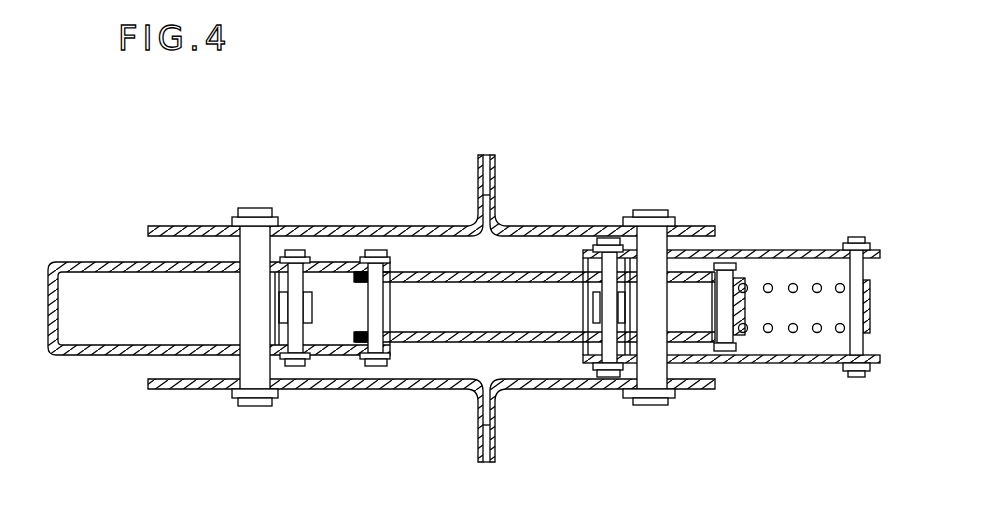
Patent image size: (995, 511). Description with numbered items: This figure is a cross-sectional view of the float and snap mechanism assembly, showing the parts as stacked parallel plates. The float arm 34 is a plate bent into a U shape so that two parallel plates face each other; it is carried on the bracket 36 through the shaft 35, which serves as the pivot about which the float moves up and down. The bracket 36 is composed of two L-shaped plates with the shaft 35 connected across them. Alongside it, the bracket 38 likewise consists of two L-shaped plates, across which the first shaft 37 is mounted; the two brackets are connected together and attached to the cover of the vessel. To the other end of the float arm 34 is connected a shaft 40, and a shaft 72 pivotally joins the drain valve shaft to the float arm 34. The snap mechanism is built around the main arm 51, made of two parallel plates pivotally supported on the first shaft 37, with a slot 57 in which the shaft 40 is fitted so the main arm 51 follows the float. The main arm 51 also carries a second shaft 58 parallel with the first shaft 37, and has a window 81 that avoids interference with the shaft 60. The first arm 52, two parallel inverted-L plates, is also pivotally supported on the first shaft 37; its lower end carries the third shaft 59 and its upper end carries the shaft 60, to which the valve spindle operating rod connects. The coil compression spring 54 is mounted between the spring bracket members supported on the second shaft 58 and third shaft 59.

The float arm 34 is at (103, 262).
The shaft 35 is at (255, 234).
The bracket 36 is at (198, 228).
The first shaft 37 is at (652, 240).
The bracket 38 is at (700, 230).
The shaft 40 is at (369, 262).
The main arm 51 is at (520, 272).
The first arm 52 is at (787, 252).
The coil compression spring 54 is at (818, 333).
The slot 57 is at (418, 276).
The second shaft 58 is at (725, 365).
The third shaft 59 is at (855, 244).
The shaft 60 is at (605, 243).
The shaft 72 is at (293, 270).
The window 81 is at (590, 268).